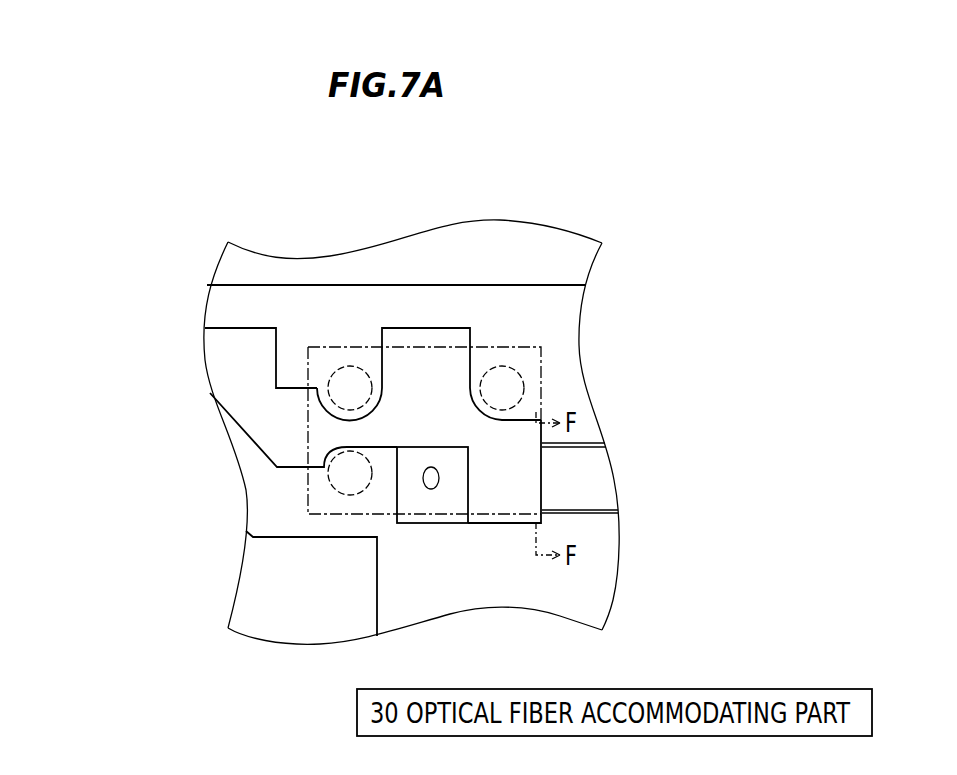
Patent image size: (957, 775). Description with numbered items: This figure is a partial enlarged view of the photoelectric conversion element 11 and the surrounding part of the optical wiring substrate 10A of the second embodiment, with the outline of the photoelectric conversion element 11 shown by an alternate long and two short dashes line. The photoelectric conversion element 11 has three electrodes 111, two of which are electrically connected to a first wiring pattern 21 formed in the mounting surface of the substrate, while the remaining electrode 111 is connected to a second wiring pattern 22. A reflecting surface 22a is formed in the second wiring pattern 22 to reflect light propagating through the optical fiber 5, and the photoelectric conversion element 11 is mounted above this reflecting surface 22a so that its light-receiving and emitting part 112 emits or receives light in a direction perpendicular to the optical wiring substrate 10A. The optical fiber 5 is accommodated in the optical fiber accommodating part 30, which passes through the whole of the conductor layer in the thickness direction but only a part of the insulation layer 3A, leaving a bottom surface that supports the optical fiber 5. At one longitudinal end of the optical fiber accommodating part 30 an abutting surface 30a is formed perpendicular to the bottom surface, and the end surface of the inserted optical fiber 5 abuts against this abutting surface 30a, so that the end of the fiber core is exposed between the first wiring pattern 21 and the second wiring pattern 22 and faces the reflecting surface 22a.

The optical wiring substrate 10A is at (114, 197).
The first wiring pattern 21 is at (217, 313).
The second wiring pattern 22 is at (248, 467).
The reflecting surface 22a is at (443, 518).
The photoelectric conversion element 11 is at (542, 392).
The electrode 111 is at (350, 367).
The light-receiving and emitting part 112 is at (431, 467).
The optical fiber 5 is at (578, 468).
The optical fiber accommodating part 30 is at (582, 515).
The abutting surface 30a is at (542, 483).
The insulation layer 3A is at (287, 633).